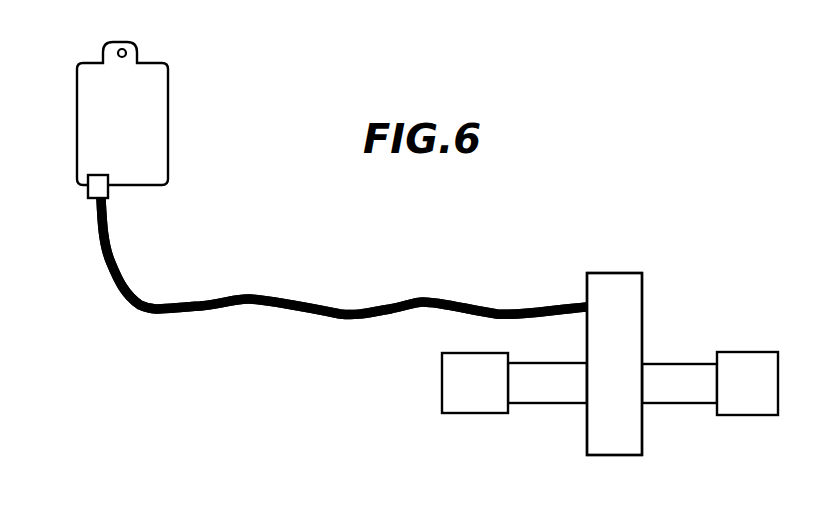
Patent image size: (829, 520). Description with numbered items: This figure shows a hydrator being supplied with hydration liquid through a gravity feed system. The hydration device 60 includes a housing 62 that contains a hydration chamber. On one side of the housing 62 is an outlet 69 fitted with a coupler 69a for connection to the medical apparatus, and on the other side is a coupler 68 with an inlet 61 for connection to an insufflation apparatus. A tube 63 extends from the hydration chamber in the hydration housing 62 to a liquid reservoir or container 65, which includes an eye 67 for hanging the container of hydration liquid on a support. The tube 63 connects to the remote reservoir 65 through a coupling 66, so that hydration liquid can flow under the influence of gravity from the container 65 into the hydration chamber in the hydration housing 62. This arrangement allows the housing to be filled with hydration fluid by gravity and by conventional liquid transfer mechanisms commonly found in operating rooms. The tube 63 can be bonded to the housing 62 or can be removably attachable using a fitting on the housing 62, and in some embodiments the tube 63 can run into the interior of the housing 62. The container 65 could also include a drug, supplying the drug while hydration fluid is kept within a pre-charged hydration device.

The hydration device 60 is at (616, 236).
The inlet 61 is at (555, 403).
The housing 62 is at (618, 442).
The tube 63 is at (347, 310).
The liquid reservoir or container 65 is at (168, 90).
The coupling 66 is at (92, 178).
The eye 67 is at (126, 50).
The coupler 68 is at (447, 387).
The outlet 69 is at (677, 398).
The coupler 69a is at (747, 400).